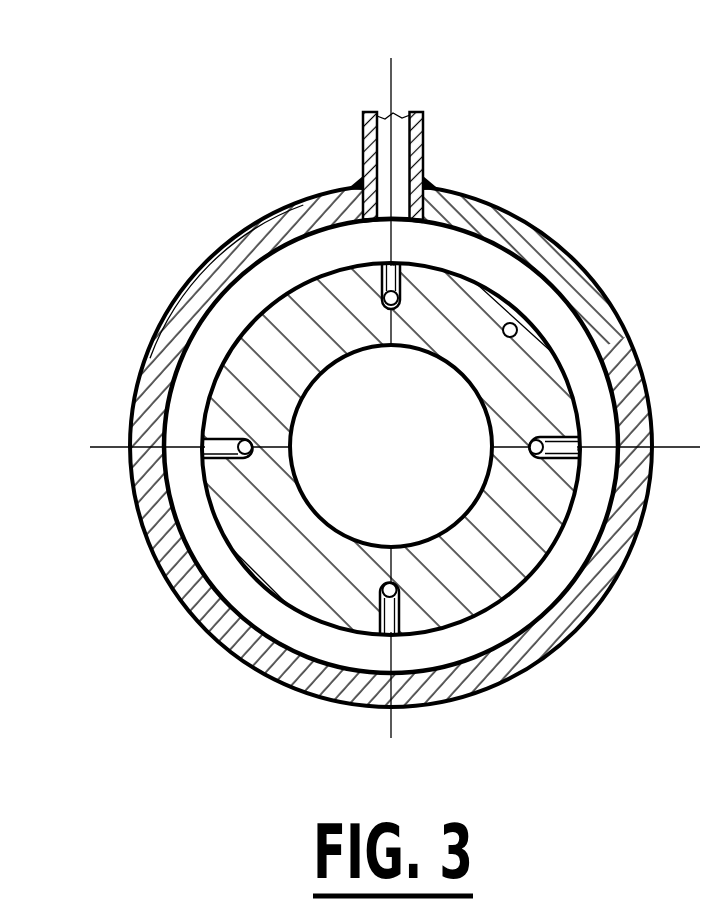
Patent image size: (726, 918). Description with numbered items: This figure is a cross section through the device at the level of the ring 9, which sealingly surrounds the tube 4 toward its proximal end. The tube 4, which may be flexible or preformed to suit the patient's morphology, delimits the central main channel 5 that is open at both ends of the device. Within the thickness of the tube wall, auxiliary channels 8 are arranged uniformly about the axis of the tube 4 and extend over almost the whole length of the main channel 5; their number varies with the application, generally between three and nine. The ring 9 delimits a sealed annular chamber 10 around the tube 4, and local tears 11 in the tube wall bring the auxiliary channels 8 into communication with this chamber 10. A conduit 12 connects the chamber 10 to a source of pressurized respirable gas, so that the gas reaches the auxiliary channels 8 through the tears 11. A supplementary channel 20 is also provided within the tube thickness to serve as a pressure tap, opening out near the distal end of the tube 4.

The tube 4 is at (240, 335).
The main channel 5 is at (366, 433).
The auxiliary channels 8 is at (381, 301).
The ring 9 is at (578, 263).
The sealed annular chamber 10 is at (565, 568).
The local tears 11 is at (404, 263).
The conduit 12 is at (425, 122).
The supplementary channel 20 is at (517, 328).